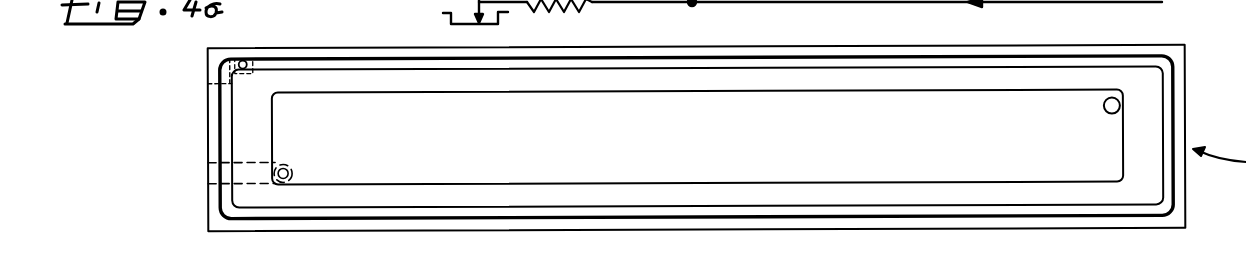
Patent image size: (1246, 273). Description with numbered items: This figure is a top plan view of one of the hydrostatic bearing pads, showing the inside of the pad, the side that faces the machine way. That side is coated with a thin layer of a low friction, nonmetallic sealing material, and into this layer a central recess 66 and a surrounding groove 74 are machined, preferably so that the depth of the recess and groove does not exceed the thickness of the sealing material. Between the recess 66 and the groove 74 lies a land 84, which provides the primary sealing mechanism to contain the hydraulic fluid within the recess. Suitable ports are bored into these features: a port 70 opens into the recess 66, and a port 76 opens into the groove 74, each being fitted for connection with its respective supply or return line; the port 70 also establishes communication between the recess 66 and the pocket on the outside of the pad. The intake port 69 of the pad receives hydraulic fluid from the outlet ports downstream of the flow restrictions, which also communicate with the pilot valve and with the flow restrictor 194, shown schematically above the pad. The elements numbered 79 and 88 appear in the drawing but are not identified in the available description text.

The recess 66 is at (547, 151).
The intake port 69 is at (212, 178).
The port 70 is at (1104, 108).
The groove 74 is at (223, 133).
The port 76 is at (245, 58).
The conductor 79 is at (443, 13).
The land 84 is at (258, 124).
The lead 88 is at (213, 88).
The flow restrictor 194 is at (567, 12).